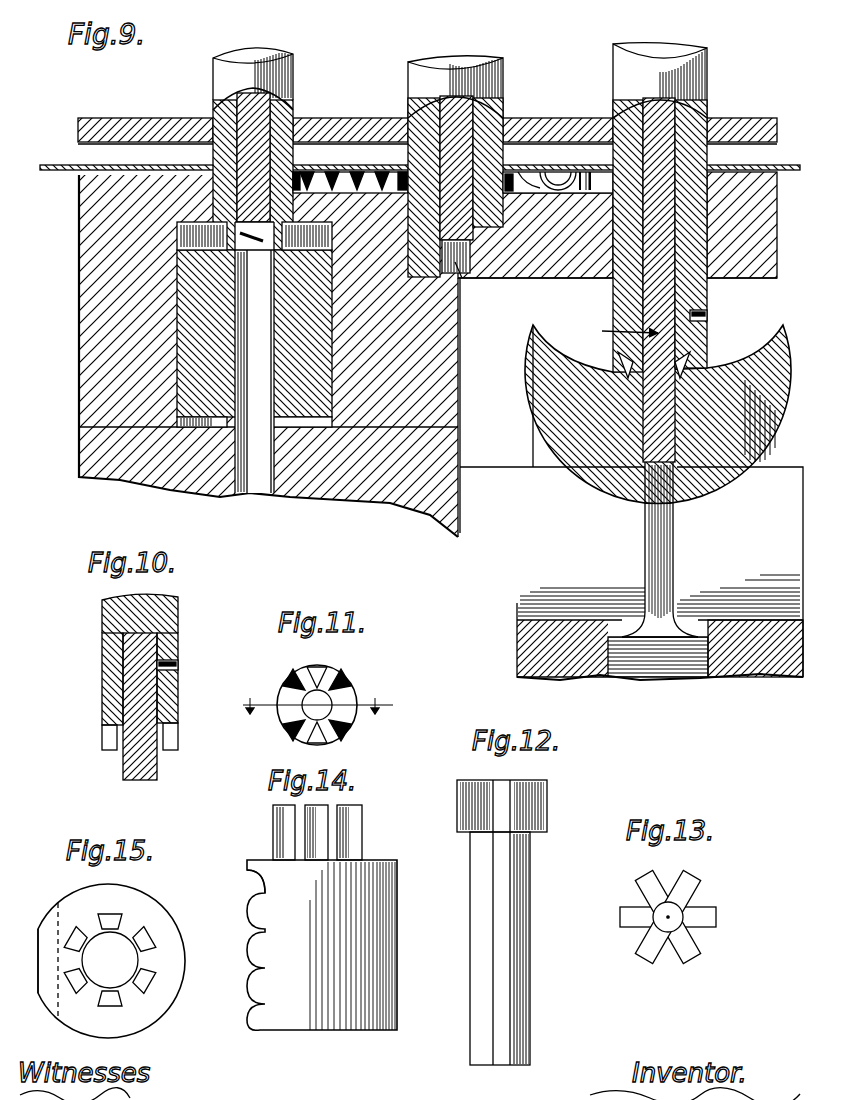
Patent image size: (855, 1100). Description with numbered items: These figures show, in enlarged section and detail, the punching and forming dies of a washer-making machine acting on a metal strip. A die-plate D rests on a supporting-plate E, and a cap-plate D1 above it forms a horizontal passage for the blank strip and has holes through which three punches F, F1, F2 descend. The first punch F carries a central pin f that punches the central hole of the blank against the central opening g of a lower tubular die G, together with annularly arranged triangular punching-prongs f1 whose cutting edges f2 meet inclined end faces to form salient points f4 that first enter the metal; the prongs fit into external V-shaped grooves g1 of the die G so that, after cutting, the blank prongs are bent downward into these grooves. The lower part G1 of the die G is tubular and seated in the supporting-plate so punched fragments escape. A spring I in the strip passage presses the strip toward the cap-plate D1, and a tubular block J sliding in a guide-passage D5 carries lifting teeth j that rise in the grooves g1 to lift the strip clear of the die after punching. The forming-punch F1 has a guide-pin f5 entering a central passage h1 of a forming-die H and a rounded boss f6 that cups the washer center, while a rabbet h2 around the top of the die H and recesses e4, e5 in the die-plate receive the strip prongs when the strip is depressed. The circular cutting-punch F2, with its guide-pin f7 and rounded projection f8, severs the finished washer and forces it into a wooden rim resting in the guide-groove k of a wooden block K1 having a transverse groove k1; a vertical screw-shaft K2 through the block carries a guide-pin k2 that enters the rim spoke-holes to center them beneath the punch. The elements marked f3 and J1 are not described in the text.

In FIG. 9, the supporting-plate E is at (405, 490).
In FIG. 9, the die-plate D is at (450, 305).
In FIG. 9, the cap-plate D1 is at (158, 126).
In FIG. 9, the guide-passage D5 is at (212, 428).
In FIG. 9, the upwardly-pressing spring I is at (130, 171).
In FIG. 9, the punch F is at (262, 52).
In FIG. 10, the punch F is at (179, 607).
In FIG. 9, the forming-punch F1 is at (440, 64).
In FIG. 9, the circular cutting-punch F2 is at (640, 48).
In FIG. 9, the tubular die G is at (278, 193).
In FIG. 12, the tubular die G is at (537, 797).
In FIG. 13, the tubular die G is at (686, 943).
In FIG. 12, the lower part of die G1 is at (531, 936).
In FIG. 13, the central opening g is at (680, 910).
In FIG. 12, the V-shaped grooves g1 is at (466, 782).
In FIG. 13, the V-shaped grooves g1 is at (668, 962).
In FIG. 9, the forming-die H is at (514, 170).
In FIG. 9, the central passage h1 is at (483, 278).
In FIG. 9, the groove or rabbet h2 is at (512, 178).
In FIG. 9, the recess e4 is at (343, 172).
In FIG. 9, the recess e5 is at (596, 172).
In FIG. 10, the central pin f is at (137, 778).
In FIG. 10, the punching-prongs f1 is at (181, 745).
In FIG. 11, the punching-prongs f1 is at (345, 690).
In FIG. 10, the cutting edges f2 is at (100, 752).
In FIG. 11, the cutting edges f2 is at (338, 672).
In FIG. 9, the pin f3 is at (258, 244).
In FIG. 10, the salient points f4 is at (112, 752).
In FIG. 11, the salient points f4 is at (340, 720).
In FIG. 9, the guide-pin f5 is at (462, 279).
In FIG. 9, the rounded boss f6 is at (404, 171).
In FIG. 9, the guide-pin f7 is at (621, 331).
In FIG. 9, the concentric rounded projection f8 is at (709, 323).
In FIG. 9, the tubular block J is at (310, 420).
In FIG. 14, the tubular block J is at (322, 945).
In FIG. 15, the tubular block J is at (111, 961).
In FIG. 14, the tube serration J1 is at (258, 895).
In FIG. 15, the tube serration J1 is at (48, 924).
In FIG. 14, the lifting teeth j is at (352, 812).
In FIG. 15, the lifting teeth j is at (140, 940).
In FIG. 9, the central guide-groove k is at (722, 488).
In FIG. 9, the transverse groove k1 is at (631, 477).
In FIG. 9, the guide-pin k2 is at (673, 560).
In FIG. 9, the wooden block K1 is at (735, 677).
In FIG. 9, the vertical screw-shaft K2 is at (640, 677).